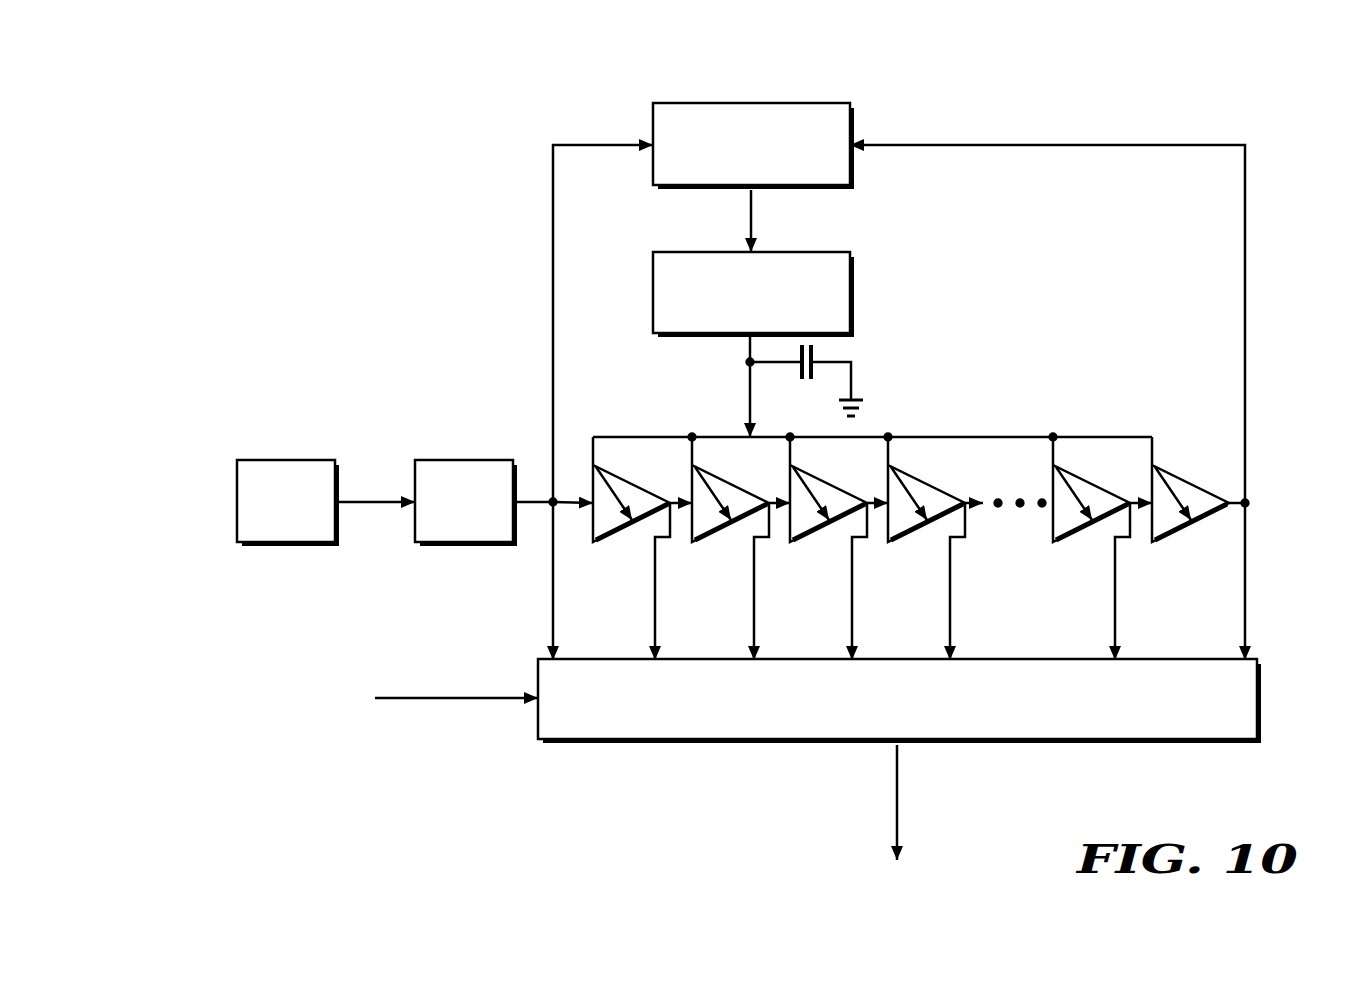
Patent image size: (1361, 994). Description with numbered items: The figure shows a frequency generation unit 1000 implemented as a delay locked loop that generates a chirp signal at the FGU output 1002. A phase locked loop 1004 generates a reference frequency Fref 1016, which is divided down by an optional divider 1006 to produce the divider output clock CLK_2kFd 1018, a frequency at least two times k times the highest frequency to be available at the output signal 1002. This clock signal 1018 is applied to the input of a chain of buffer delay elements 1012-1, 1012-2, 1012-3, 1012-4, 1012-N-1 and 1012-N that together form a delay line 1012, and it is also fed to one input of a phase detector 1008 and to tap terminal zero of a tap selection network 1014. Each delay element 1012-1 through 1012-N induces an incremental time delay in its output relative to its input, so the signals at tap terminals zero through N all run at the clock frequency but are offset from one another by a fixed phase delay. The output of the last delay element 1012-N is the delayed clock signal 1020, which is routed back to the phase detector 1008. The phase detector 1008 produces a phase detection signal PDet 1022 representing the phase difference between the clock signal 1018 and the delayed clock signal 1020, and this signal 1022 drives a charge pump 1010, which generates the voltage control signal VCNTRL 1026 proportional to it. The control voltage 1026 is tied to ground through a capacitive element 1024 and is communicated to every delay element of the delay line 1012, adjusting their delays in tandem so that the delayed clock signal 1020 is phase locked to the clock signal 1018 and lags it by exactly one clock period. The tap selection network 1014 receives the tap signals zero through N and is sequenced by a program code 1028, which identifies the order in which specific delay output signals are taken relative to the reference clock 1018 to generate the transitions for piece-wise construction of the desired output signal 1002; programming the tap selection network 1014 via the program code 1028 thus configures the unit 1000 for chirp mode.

The FGU (with CGC) 1000 is at (508, 73).
The FGU output 1002 is at (860, 802).
The phased locked loop 1004 is at (290, 460).
The divider 1006 is at (465, 460).
The phase detector 1008 is at (688, 102).
The charge pump 1010 is at (688, 251).
The delay line 1012 is at (1026, 418).
The delay element 1012-1 is at (608, 545).
The delay element 1012-2 is at (707, 545).
The delay element 1012-3 is at (805, 545).
The delay element 1012-4 is at (903, 545).
The delay element 1012-N-1 is at (1068, 545).
The delay element 1012-N is at (1167, 545).
The tap selection network 1014 is at (615, 746).
The reference frequency Fref 1016 is at (372, 503).
The divider output frequency CLK_2kFd 1018 is at (535, 503).
The delayed clock signal 1020 is at (1245, 383).
The phase detection signal 1022 is at (752, 213).
The capacitive element 1024 is at (812, 354).
The voltage control signal 1026 is at (715, 385).
The program code 1028 is at (456, 738).